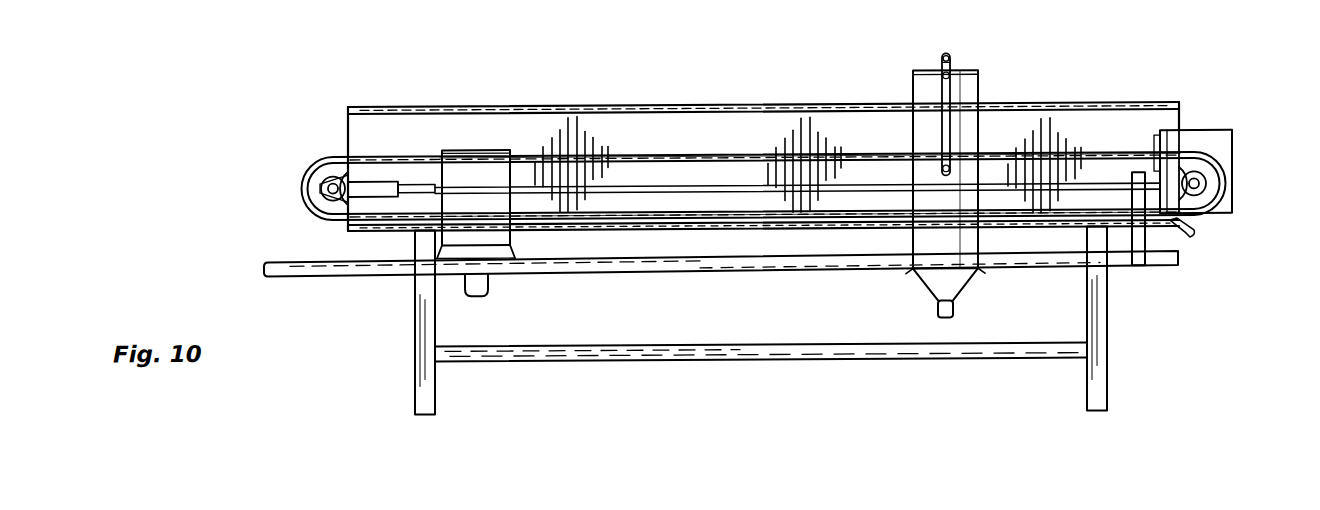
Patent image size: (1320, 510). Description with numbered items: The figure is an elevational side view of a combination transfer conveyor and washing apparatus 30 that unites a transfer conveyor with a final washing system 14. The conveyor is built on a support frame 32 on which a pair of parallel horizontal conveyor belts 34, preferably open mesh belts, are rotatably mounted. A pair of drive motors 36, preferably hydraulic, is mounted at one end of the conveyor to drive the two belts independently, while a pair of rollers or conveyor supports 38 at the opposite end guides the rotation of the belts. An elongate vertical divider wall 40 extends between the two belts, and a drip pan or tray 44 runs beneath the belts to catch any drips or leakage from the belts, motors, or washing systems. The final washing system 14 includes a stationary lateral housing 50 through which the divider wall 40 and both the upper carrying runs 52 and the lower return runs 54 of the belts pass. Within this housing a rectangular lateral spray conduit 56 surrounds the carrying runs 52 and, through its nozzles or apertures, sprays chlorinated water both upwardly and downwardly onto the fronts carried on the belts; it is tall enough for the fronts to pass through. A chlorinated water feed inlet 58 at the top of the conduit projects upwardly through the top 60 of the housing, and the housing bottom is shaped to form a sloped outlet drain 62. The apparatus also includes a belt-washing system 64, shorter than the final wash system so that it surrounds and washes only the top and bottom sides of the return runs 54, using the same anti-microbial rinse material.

The final washing system 14 is at (967, 79).
The combination transfer conveyor and washing apparatus 30 is at (400, 97).
The support frame 32 is at (415, 387).
The conveyor belts 34 is at (382, 158).
The drive motors 36 is at (1212, 162).
The rollers or conveyor supports 38 is at (307, 207).
The vertical divider wall 40 is at (627, 134).
The drip pan or tray 44 is at (282, 273).
The stationary lateral housing 50 is at (913, 93).
The carrying runs 52 is at (648, 160).
The return runs 54 is at (686, 221).
The rectangular lateral spray conduit 56 is at (985, 96).
The chlorinated water feed inlet 58 is at (947, 57).
The top of lateral housing 60 is at (925, 73).
The sloped outlet drain 62 is at (485, 283).
The belt-washing system 64 is at (510, 248).